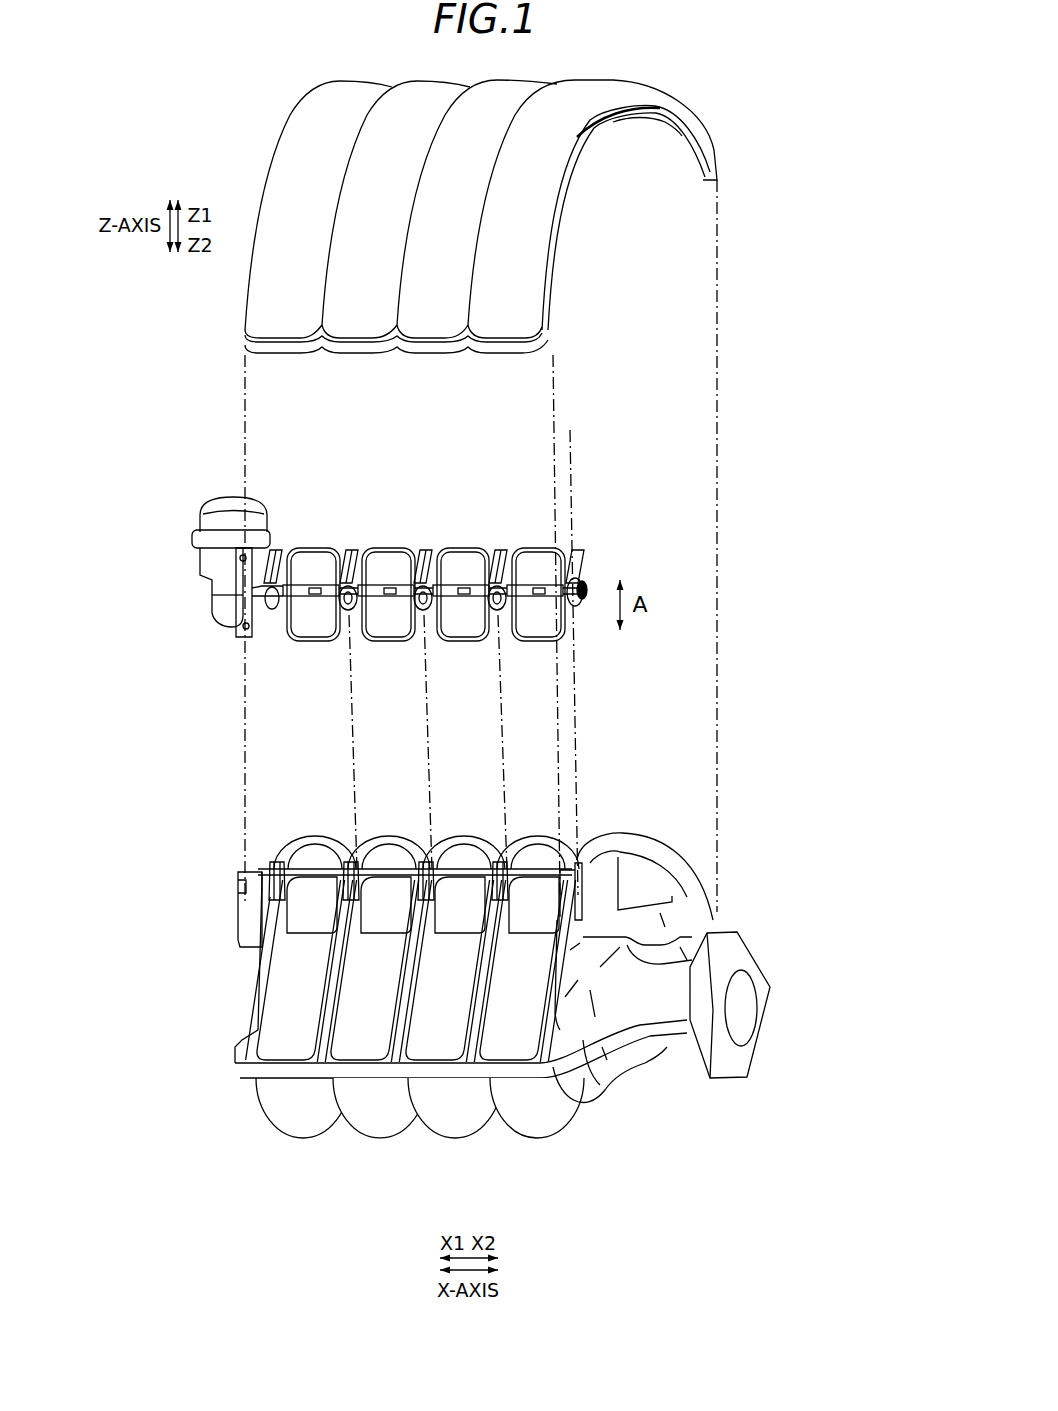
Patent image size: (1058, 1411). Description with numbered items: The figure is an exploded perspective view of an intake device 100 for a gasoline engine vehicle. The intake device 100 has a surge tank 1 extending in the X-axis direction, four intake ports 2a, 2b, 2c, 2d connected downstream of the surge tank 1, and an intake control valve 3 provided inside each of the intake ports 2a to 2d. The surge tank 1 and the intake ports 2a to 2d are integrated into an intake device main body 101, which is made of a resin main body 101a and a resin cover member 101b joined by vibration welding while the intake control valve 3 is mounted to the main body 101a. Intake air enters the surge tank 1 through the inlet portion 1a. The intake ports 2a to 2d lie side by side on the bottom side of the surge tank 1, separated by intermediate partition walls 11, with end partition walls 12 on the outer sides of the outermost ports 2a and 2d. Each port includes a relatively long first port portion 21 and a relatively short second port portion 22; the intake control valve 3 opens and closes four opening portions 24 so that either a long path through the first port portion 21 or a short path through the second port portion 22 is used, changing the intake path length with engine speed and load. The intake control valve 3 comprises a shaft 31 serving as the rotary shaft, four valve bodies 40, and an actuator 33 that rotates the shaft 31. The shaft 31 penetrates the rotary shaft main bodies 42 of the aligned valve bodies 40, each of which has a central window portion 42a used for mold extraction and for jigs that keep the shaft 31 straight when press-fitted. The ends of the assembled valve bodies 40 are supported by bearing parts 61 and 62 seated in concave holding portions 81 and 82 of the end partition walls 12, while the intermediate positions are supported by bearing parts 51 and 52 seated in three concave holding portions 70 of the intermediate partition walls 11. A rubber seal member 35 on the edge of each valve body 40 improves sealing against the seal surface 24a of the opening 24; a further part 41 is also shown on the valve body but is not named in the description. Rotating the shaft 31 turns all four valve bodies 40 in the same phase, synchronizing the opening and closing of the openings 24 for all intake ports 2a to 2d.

The intake device 100 is at (772, 107).
The intake device main body 101 is at (819, 157).
The main body 101a is at (719, 856).
The cover member 101b is at (703, 130).
The surge tank 1 is at (638, 1060).
The inlet portion 1a is at (745, 1027).
The intake port 2a is at (318, 1132).
The intake port 2b is at (395, 1132).
The intake port 2c is at (470, 1132).
The intake port 2d is at (547, 1132).
The intake control valve 3 is at (204, 469).
The intermediate partition wall 11 is at (325, 1020).
The end partition wall 12 is at (262, 985).
The first port portion 21 is at (287, 1049).
The second port portion 22 is at (302, 883).
The opening portion 24 is at (306, 938).
The seal surface 24a is at (312, 896).
The shaft 31 is at (236, 608).
The actuator 33 is at (203, 505).
The seal member 35 is at (343, 556).
The valve body 40 is at (318, 562).
The valve plate 41 is at (298, 640).
The rotary shaft main body 42 is at (300, 588).
The window portion 42a is at (314, 600).
The bearing part 51 is at (355, 560).
The bearing part 52 is at (430, 560).
The bearing part 61 is at (278, 565).
The bearing part 62 is at (584, 586).
The concave holding portion 70 is at (298, 918).
The concave holding portion 81 is at (600, 881).
The concave holding portion 82 is at (275, 868).